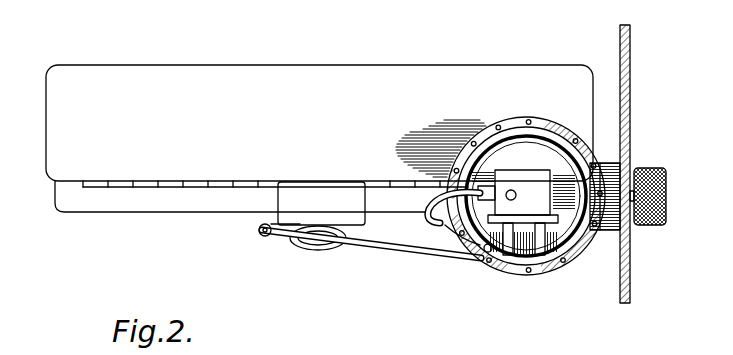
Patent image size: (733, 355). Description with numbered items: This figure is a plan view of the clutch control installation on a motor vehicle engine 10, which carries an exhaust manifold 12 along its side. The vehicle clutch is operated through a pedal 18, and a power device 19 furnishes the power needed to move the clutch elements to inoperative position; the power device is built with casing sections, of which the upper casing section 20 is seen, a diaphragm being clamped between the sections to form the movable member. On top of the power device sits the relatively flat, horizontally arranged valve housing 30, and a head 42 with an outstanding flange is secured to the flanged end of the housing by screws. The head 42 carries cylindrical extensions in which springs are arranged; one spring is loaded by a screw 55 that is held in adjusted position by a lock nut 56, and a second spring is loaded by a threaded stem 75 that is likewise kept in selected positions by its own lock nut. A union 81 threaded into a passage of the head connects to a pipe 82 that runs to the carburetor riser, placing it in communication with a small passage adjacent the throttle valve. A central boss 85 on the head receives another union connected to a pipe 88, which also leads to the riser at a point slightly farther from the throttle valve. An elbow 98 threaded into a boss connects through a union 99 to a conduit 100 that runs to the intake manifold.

The motor vehicle engine 10 is at (165, 70).
The exhaust manifold 12 is at (160, 208).
The pedal 18 is at (666, 173).
The power device 19 is at (513, 117).
The upper casing section 20 is at (539, 138).
The valve housing 30 is at (497, 168).
The head 42 is at (566, 249).
The screw 55 is at (541, 278).
The lock nut 56 is at (556, 274).
The threaded stem 75 is at (511, 278).
The union 81 is at (491, 251).
The pipe 82 is at (454, 246).
The boss 85 is at (531, 278).
The pipe 88 is at (499, 262).
The elbow 98 is at (508, 192).
The union 99 is at (478, 182).
The conduit 100 is at (435, 231).